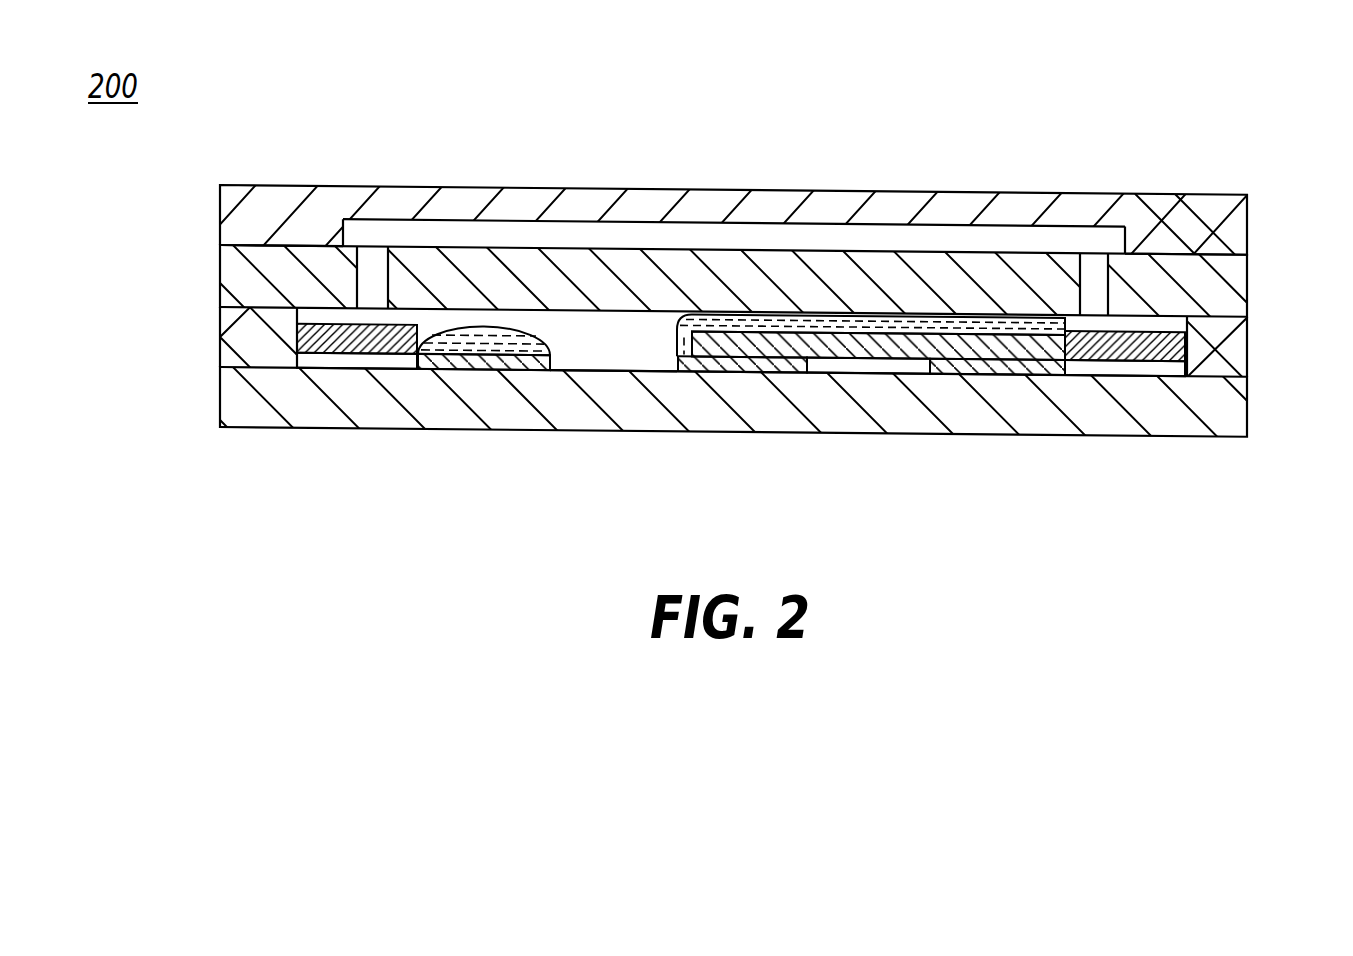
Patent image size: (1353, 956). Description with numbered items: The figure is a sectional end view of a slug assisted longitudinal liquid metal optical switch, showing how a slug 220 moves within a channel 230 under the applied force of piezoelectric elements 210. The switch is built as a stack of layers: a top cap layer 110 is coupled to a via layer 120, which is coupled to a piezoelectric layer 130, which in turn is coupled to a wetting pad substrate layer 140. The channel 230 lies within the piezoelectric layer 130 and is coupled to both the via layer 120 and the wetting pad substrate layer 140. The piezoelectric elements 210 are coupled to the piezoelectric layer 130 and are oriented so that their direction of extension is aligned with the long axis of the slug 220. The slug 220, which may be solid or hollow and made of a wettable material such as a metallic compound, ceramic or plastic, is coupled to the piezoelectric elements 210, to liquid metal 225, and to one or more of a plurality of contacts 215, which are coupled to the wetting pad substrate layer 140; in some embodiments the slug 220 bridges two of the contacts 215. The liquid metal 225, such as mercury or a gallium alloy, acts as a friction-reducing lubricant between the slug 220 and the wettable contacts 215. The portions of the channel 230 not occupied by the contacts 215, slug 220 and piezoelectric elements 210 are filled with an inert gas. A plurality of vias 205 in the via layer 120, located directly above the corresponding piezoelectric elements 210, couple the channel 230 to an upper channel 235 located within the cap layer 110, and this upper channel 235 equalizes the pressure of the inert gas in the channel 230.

The cap layer 110 is at (220, 228).
The via layer 120 is at (219, 293).
The piezoelectric layer 130 is at (219, 331).
The wetting pad substrate layer 140 is at (219, 402).
The vias 205 is at (372, 270).
The piezoelectric elements 210 is at (375, 343).
The contacts 215 is at (537, 365).
The slug 220 is at (857, 343).
The liquid metal 225 is at (490, 343).
The channel 230 is at (607, 343).
The upper channel 235 is at (490, 237).